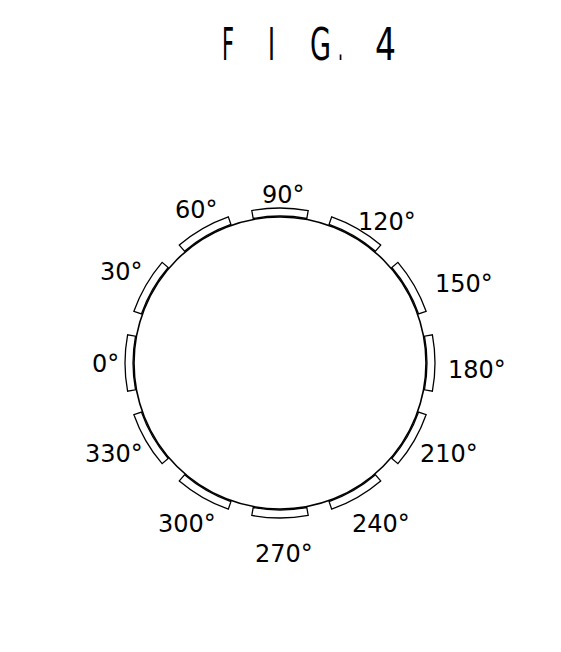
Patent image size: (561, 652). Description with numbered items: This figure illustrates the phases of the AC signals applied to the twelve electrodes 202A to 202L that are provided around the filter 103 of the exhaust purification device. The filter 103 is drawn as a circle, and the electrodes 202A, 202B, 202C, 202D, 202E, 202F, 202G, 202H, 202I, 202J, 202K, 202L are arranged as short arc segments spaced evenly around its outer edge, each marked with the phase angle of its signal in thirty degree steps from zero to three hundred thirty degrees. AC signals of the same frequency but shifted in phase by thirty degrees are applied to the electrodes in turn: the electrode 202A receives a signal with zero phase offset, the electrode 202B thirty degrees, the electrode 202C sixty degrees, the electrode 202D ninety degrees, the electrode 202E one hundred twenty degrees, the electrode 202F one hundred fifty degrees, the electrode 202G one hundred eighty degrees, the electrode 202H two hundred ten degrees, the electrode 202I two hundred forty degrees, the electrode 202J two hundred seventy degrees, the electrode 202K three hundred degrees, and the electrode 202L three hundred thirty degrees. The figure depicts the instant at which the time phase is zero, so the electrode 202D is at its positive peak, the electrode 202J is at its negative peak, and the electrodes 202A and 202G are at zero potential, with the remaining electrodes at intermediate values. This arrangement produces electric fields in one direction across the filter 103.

The filter 103 is at (131, 318).
The electrode 202A is at (136, 360).
The electrode 202B is at (157, 290).
The electrode 202C is at (214, 235).
The electrode 202D is at (278, 219).
The electrode 202E is at (354, 238).
The electrode 202F is at (405, 296).
The electrode 202G is at (426, 370).
The electrode 202H is at (407, 442).
The electrode 202I is at (355, 494).
The electrode 202J is at (281, 508).
The electrode 202K is at (204, 487).
The electrode 202L is at (148, 418).